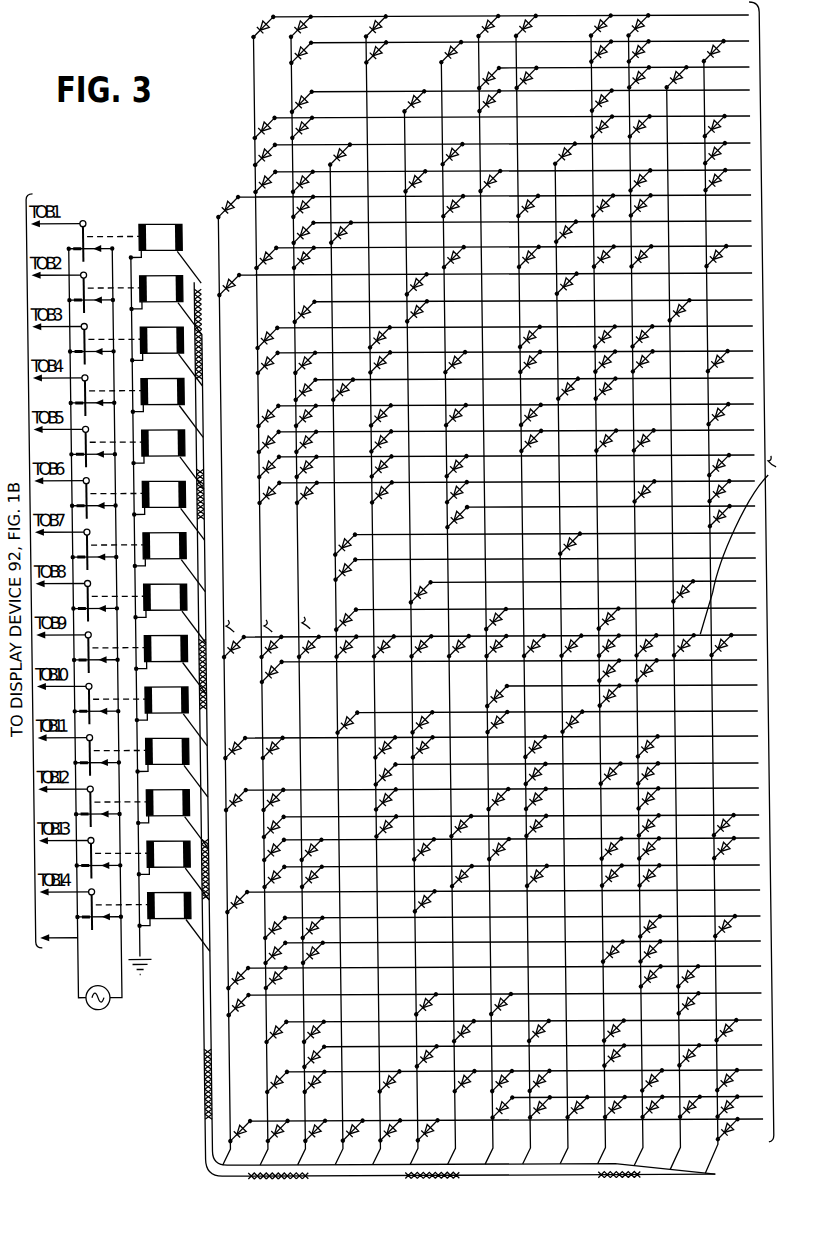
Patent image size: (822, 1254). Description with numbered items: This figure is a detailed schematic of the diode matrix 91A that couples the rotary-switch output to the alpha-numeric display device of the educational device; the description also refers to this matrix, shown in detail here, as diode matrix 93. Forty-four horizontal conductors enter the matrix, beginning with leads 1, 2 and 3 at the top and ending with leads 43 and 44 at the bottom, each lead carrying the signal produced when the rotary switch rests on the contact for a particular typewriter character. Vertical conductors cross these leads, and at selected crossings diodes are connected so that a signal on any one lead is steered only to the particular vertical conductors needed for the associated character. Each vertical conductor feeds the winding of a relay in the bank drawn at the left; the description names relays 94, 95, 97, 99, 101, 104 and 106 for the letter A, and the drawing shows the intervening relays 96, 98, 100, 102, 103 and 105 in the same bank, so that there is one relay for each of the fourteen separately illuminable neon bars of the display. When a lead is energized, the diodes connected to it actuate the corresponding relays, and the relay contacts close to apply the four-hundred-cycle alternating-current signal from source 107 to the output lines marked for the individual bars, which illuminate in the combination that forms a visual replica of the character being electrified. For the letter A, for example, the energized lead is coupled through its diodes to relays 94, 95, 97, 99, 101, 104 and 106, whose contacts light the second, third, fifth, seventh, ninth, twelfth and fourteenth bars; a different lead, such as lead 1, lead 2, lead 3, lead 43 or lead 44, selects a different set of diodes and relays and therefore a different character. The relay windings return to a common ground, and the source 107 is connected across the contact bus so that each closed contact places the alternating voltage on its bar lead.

The lead 1 is at (722, 21).
The lead 2 is at (722, 47).
The lead 3 is at (722, 72).
The lead 43 is at (726, 1101).
The lead 44 is at (726, 1125).
The diode matrix 91A is at (209, 172).
The diode matrix 93 is at (155, 224).
The relay 94 is at (154, 277).
The relay 95 is at (154, 328).
The relay 96 is at (154, 380).
The relay 97 is at (154, 431).
The relay 98 is at (154, 482).
The relay 99 is at (154, 534).
The relay 100 is at (150, 585).
The relay 101 is at (150, 637).
The relay 102 is at (150, 688).
The relay 103 is at (150, 740).
The relay 104 is at (150, 791).
The relay 105 is at (150, 842).
The relay 106 is at (150, 894).
The source 107 is at (88, 1010).